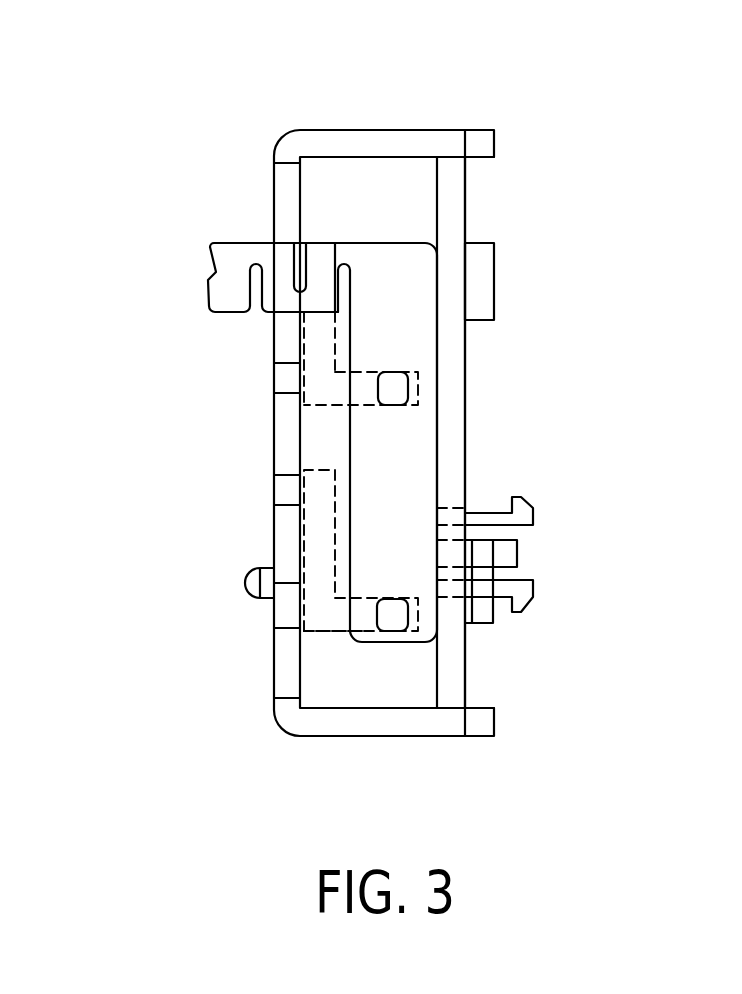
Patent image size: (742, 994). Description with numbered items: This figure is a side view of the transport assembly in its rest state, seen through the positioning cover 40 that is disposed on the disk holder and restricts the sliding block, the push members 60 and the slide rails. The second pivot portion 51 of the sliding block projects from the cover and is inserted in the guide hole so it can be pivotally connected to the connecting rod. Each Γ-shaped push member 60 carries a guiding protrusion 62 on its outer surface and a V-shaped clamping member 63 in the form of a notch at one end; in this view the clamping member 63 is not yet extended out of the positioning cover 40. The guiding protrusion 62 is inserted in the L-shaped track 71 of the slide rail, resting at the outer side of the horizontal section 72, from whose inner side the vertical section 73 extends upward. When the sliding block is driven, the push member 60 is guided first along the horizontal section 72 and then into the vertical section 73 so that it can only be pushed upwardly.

The positioning cover 40 is at (283, 139).
The second pivot portion 51 is at (518, 553).
The push member 60 is at (407, 282).
The guiding protrusion 62 is at (395, 388).
The clamping member 63 is at (216, 272).
The L-shaped track 71 is at (328, 635).
The horizontal section 72 is at (362, 400).
The vertical section 73 is at (318, 355).